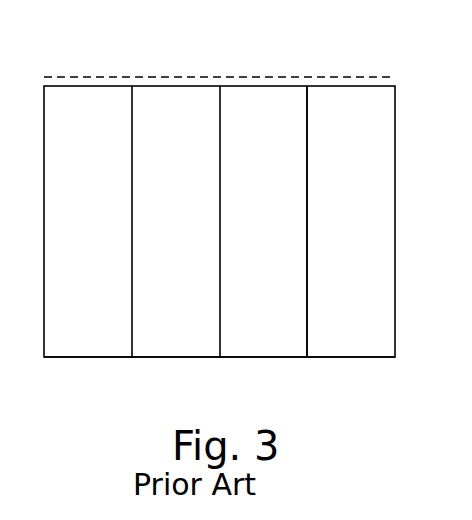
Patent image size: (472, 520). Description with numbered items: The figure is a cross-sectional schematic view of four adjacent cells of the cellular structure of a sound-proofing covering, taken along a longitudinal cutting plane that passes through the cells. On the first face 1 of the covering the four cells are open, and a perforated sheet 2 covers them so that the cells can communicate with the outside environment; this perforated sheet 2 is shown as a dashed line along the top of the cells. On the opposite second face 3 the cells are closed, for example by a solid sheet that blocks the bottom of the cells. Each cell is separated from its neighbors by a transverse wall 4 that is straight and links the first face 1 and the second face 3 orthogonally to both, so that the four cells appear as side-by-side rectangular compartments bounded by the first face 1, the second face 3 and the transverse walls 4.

The first face 1 is at (90, 79).
The perforated sheet 2 is at (330, 77).
The second face 3 is at (352, 358).
The transverse wall 4 is at (307, 153).